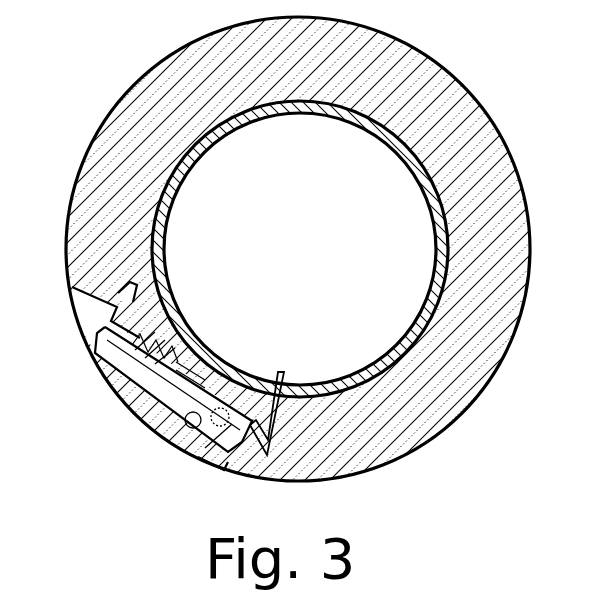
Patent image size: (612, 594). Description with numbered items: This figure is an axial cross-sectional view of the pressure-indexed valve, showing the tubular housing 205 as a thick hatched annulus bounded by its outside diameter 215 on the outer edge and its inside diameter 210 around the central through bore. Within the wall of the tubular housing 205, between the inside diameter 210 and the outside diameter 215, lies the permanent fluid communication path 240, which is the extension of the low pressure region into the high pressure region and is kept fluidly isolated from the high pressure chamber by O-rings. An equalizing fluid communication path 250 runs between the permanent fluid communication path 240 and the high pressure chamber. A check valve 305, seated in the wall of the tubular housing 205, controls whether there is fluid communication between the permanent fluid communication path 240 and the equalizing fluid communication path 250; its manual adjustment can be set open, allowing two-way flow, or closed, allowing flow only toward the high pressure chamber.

The tubular housing 205 is at (158, 72).
The outside diameter 215 is at (78, 172).
The inside diameter 210 is at (166, 206).
The permanent fluid communication path 240 is at (172, 442).
The check valve 305 is at (196, 372).
The equalizing fluid communication path 250 is at (270, 402).